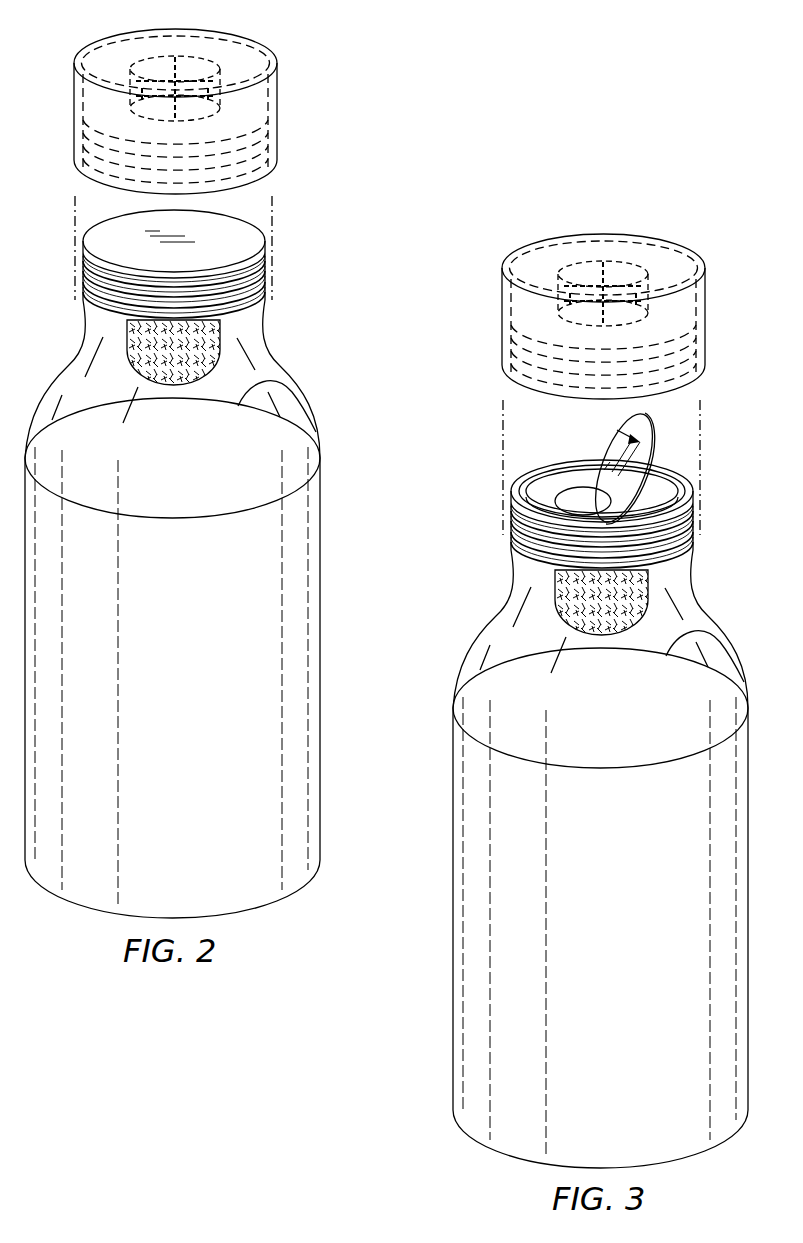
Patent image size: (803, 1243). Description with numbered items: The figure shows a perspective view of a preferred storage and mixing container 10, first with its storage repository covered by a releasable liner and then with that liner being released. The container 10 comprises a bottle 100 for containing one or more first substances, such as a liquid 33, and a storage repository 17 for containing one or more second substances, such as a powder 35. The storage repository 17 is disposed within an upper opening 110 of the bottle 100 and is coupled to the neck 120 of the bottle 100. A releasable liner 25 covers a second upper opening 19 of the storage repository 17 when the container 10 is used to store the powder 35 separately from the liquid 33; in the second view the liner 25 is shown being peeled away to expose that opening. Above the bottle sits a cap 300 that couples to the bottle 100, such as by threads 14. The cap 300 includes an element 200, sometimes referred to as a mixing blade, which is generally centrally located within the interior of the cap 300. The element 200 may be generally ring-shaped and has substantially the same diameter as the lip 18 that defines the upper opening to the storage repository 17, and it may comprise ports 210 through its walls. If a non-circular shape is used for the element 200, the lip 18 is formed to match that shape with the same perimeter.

In FIG. 2, the storage and mixing container 10 is at (308, 269).
In FIG. 3, the storage and mixing container 10 is at (482, 551).
In FIG. 2, the threads 14 is at (90, 270).
In FIG. 3, the threads 14 is at (693, 533).
In FIG. 2, the storage repository 17 is at (168, 383).
In FIG. 3, the storage repository 17 is at (617, 635).
In FIG. 3, the lip 18 is at (545, 487).
In FIG. 3, the second upper opening 19 is at (583, 495).
In FIG. 2, the releasable liner 25 is at (108, 233).
In FIG. 3, the releasable liner 25 is at (657, 430).
In FIG. 2, the liquid 33 is at (235, 407).
In FIG. 3, the liquid 33 is at (670, 650).
In FIG. 2, the powder 35 is at (197, 352).
In FIG. 3, the powder 35 is at (555, 603).
In FIG. 2, the bottle 100 is at (320, 508).
In FIG. 3, the bottle 100 is at (455, 760).
In FIG. 3, the upper opening 110 is at (528, 490).
In FIG. 2, the neck 120 is at (265, 250).
In FIG. 3, the neck 120 is at (693, 497).
In FIG. 2, the mixing blade 200 is at (220, 63).
In FIG. 3, the mixing blade 200 is at (633, 263).
In FIG. 2, the ports 210 is at (130, 80).
In FIG. 3, the ports 210 is at (555, 292).
In FIG. 2, the cap 300 is at (277, 107).
In FIG. 3, the cap 300 is at (502, 308).